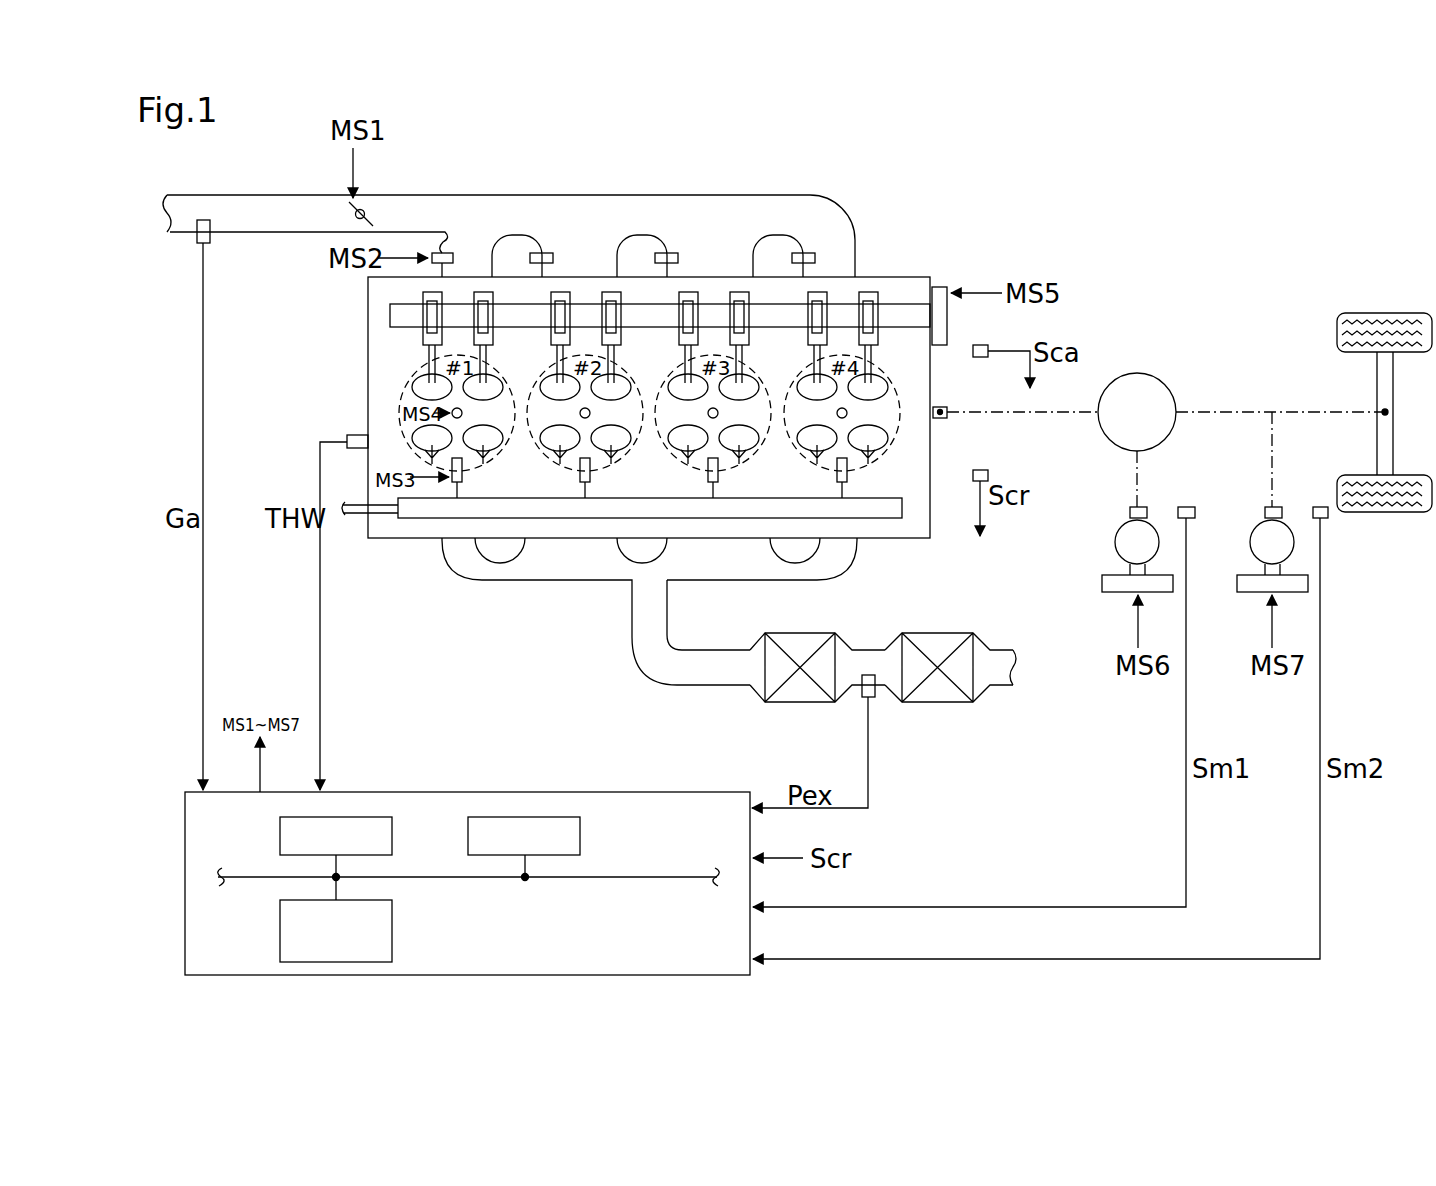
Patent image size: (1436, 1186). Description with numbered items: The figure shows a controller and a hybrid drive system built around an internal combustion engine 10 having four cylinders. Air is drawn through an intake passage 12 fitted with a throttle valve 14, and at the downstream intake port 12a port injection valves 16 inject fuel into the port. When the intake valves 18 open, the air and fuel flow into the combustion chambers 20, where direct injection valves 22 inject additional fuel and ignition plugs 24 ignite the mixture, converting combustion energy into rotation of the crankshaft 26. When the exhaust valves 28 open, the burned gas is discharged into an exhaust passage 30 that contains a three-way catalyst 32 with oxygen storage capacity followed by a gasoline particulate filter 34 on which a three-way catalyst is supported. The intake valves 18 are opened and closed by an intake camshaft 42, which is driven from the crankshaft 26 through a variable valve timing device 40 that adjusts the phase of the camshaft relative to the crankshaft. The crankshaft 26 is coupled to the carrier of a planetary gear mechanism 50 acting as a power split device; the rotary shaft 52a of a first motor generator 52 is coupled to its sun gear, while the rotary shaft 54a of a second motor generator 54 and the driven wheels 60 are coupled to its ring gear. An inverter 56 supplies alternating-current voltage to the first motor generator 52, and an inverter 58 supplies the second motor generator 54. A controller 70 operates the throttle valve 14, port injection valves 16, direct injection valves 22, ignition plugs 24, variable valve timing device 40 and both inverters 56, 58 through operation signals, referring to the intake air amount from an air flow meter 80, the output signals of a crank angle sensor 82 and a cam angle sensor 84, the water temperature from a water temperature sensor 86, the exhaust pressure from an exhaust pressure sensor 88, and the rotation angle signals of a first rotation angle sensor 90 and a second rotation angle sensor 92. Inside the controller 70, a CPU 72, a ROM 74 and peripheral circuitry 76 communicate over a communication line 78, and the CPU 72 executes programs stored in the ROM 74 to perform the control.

The internal combustion engine 10 is at (936, 250).
The intake passage 12 is at (207, 195).
The intake port 12a is at (826, 212).
The throttle valve 14 is at (373, 217).
The port injection valves 16 is at (795, 255).
The intake valves 18 is at (428, 362).
The combustion chambers 20 is at (402, 400).
The direct injection valves 22 is at (466, 475).
The ignition plugs 24 is at (468, 412).
The crankshaft 26 is at (950, 420).
The exhaust valves 28 is at (490, 452).
The exhaust passage 30 is at (728, 582).
The three-way catalyst 32 is at (800, 633).
The gasoline particulate filter (GPF) 34 is at (940, 633).
The variable valve timing device 40 is at (949, 316).
The intake camshaft 42 is at (898, 304).
The planetary gear mechanism 50 is at (1150, 376).
The first motor generator 52 is at (1115, 542).
The rotary shaft of the first motor generator 52a is at (1128, 512).
The second motor generator 54 is at (1250, 542).
The rotary shaft of the second motor generator 54a is at (1263, 512).
The inverter 56 is at (1102, 583).
The inverter 58 is at (1237, 583).
The driven wheels 60 is at (1385, 512).
The controller 70 is at (435, 792).
The CPU 72 is at (395, 836).
The ROM 74 is at (583, 838).
The peripheral circuitry 76 is at (395, 931).
The communication line 78 is at (676, 877).
The air flow meter 80 is at (198, 248).
The crank angle sensor 82 is at (992, 475).
The cam angle sensor 84 is at (982, 358).
The water temperature sensor 86 is at (347, 438).
The exhaust pressure sensor 88 is at (875, 697).
The first rotation angle sensor 90 is at (1184, 507).
The second rotation angle sensor 92 is at (1319, 507).